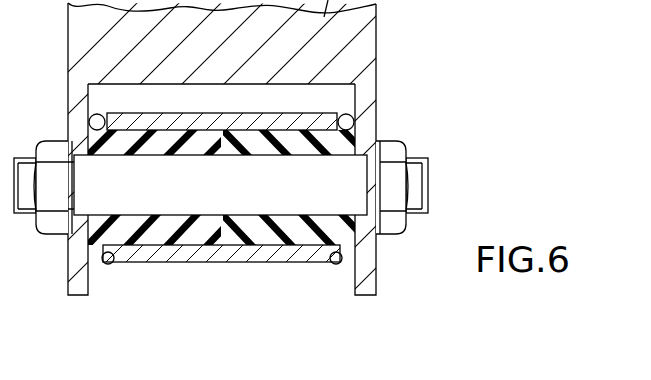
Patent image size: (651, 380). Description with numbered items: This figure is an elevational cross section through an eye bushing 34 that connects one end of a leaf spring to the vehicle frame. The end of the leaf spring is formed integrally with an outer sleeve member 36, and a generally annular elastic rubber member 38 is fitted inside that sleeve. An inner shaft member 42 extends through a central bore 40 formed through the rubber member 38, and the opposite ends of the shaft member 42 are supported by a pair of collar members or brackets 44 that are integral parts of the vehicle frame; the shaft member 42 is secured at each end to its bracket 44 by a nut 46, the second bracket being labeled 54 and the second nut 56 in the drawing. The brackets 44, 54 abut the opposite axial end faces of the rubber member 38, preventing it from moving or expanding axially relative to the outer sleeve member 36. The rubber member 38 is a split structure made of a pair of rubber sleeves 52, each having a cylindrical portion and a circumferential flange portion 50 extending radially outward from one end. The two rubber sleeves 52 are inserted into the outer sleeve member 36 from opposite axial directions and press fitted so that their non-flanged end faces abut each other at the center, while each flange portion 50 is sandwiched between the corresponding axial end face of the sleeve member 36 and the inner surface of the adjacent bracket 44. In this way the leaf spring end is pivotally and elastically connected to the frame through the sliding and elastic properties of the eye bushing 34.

The eye bushing 34 is at (222, 212).
The outer sleeve member 36 is at (160, 256).
The elastic rubber member 38 is at (224, 218).
The central bore 40 is at (110, 160).
The inner shaft member 42 is at (123, 202).
The bracket 44 is at (72, 284).
The nut 46 is at (50, 229).
The flange portion 50 is at (99, 116).
The rubber sleeve 52 is at (187, 240).
The right housing plate 54 is at (373, 287).
The nut 56 is at (387, 142).